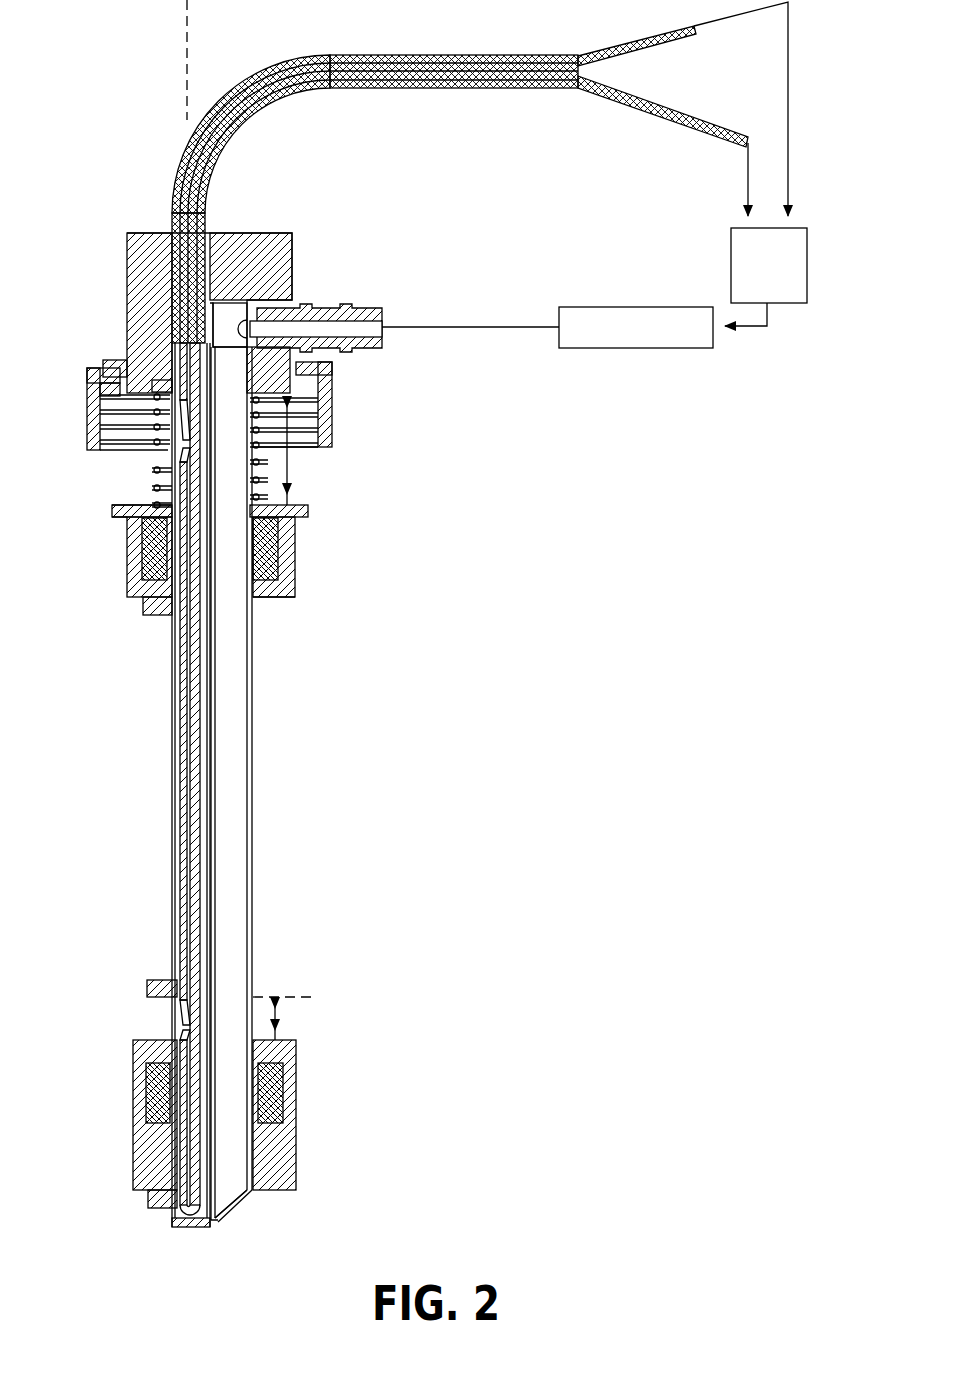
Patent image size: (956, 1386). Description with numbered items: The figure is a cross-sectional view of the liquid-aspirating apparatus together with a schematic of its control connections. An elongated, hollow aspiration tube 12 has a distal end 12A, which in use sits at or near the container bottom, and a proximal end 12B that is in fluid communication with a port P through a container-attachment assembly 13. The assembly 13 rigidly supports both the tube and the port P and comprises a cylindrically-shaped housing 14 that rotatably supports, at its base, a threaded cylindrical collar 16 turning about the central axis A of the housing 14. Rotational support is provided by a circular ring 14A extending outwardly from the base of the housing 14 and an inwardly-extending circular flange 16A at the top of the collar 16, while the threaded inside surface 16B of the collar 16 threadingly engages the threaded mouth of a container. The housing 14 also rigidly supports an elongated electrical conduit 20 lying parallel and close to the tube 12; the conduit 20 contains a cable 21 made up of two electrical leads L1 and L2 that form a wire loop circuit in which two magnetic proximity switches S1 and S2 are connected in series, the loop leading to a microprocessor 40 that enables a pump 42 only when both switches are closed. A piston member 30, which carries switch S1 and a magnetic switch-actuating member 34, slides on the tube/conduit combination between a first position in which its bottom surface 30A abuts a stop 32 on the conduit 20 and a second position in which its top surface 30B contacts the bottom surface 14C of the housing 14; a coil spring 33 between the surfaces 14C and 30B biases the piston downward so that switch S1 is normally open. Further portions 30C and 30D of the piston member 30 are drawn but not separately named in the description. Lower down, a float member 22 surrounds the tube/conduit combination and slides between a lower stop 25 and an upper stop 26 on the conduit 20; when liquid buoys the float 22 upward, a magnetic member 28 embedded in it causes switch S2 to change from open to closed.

The central axis A is at (190, 72).
The cable 21 is at (412, 90).
The electrical lead L1 is at (665, 40).
The electrical lead L2 is at (683, 112).
The microprocessor 40 is at (800, 272).
The pump 42 is at (659, 346).
The container-attachment assembly 13 is at (247, 276).
The housing 14 is at (275, 268).
The port P is at (345, 310).
The proximal end 12B is at (250, 362).
The threaded cylindrical collar 16 is at (326, 423).
The circular flange 16A is at (108, 358).
The circular ring 14A is at (110, 400).
The threaded inside surface 16B is at (105, 422).
The coil spring 33 is at (155, 497).
The bottom surface 14C is at (297, 404).
The magnetic proximity switch S1 is at (168, 440).
The electrical conduit 20 is at (172, 760).
The magnetic proximity switch S2 is at (178, 1022).
The aspiration tube 12 is at (237, 802).
The distal end 12A is at (258, 1204).
The piston member 30 is at (216, 586).
The top surface 30B is at (290, 512).
The actuator body 30D is at (306, 520).
The magnetic switch-actuating member 34 is at (145, 556).
The stop 32 is at (150, 614).
The bottom surface 30A is at (135, 598).
The actuator lower portion 30C is at (298, 598).
The float member 22 is at (263, 1093).
The magnetic member 28 is at (285, 1076).
The stop 26 is at (150, 978).
The stop 25 is at (147, 1200).